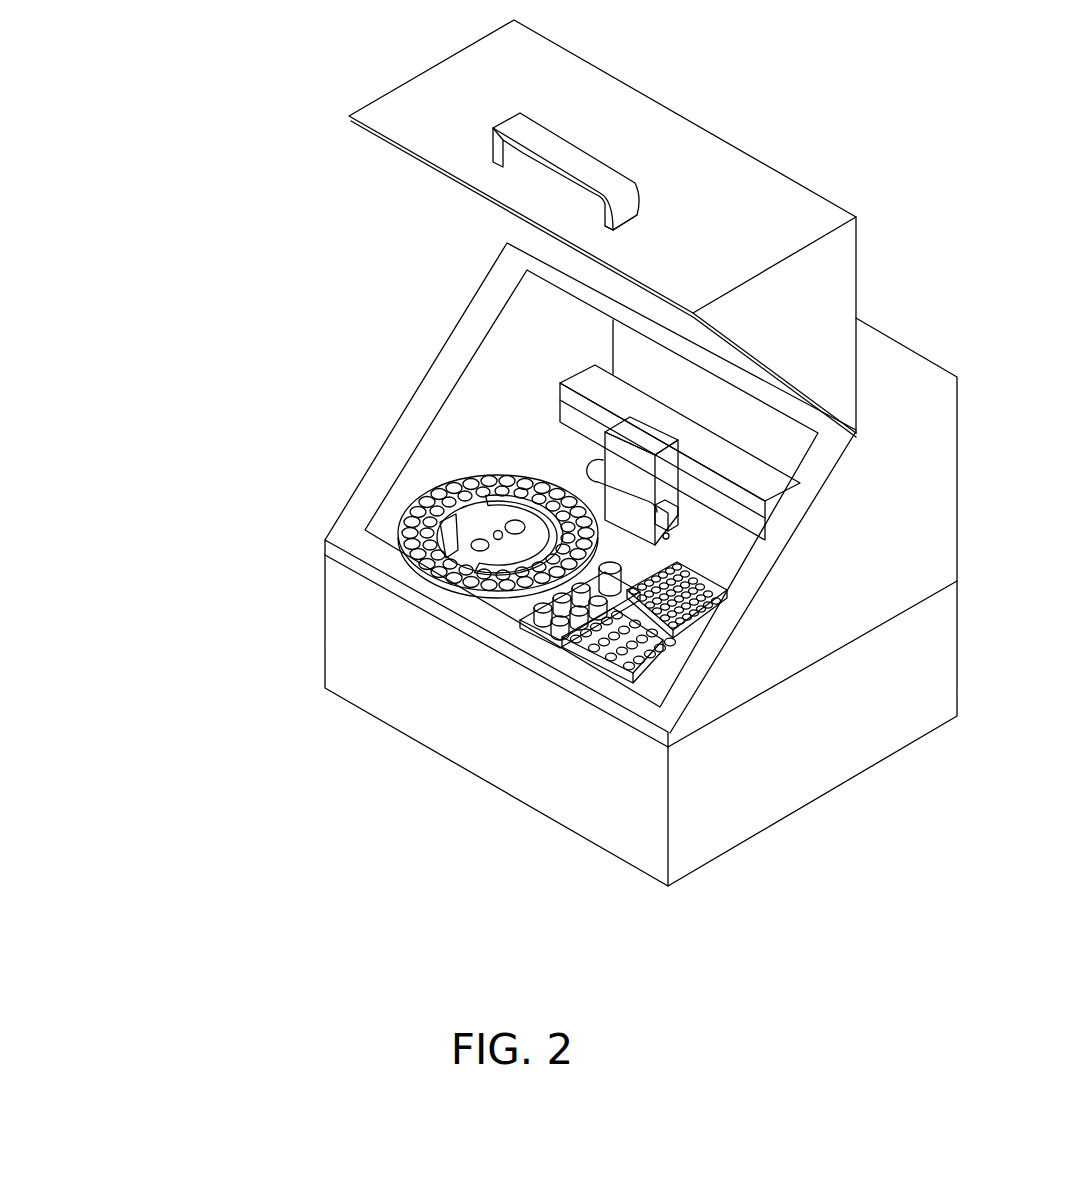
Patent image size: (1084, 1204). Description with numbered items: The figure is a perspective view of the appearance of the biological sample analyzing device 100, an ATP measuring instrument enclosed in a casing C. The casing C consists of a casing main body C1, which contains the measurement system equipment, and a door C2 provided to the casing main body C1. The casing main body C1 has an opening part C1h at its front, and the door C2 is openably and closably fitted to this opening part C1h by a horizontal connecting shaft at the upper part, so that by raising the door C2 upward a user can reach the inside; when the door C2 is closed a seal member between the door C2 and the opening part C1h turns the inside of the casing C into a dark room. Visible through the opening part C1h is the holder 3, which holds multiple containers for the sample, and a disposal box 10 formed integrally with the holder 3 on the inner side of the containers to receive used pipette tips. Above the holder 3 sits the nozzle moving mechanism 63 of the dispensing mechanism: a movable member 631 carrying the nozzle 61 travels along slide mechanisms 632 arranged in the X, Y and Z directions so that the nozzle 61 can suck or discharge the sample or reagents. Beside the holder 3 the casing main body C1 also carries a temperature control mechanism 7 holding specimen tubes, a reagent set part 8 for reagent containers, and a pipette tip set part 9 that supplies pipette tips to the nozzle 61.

The sample analyzing device 100 is at (185, 195).
The casing C is at (380, 723).
The casing main body C1 is at (322, 617).
The opening part C1h is at (498, 318).
The door C2 is at (428, 68).
The disposal box 10 is at (412, 506).
The holder 3 is at (430, 555).
The nozzle moving mechanism 63 is at (556, 440).
The slide mechanisms 632 is at (605, 387).
The movable member 631 is at (680, 520).
The nozzle 61 is at (667, 537).
The reagent set part 8 is at (507, 617).
The temperature control mechanism 7 is at (583, 657).
The pipette tip set part 9 is at (660, 637).